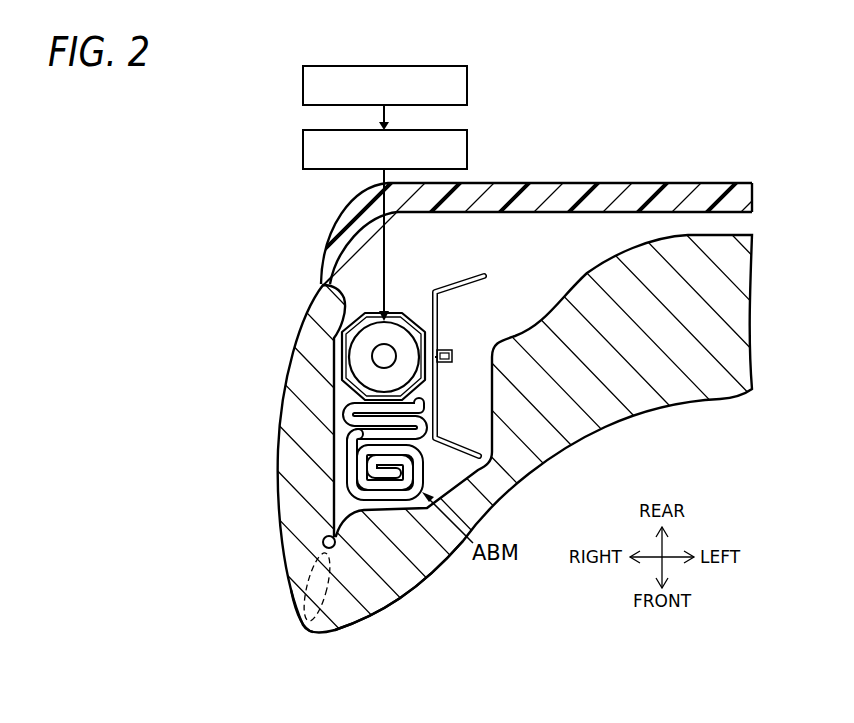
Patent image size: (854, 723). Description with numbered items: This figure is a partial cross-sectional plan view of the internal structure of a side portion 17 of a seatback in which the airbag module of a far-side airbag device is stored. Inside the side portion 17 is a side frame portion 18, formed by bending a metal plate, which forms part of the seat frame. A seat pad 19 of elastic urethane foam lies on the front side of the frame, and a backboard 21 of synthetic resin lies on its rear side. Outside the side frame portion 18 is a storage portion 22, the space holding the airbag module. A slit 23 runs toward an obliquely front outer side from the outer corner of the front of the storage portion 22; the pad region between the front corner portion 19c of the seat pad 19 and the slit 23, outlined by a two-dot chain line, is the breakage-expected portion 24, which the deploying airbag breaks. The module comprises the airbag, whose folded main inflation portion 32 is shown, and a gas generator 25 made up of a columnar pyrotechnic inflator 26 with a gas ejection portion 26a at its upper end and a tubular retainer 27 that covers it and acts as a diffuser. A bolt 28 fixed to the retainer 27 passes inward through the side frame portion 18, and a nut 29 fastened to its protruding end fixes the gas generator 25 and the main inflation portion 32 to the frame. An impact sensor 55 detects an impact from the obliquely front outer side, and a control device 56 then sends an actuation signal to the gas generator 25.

The side portion 17 is at (410, 582).
The side frame portion 18 is at (460, 277).
The seat pad 19 is at (553, 450).
The front corner portion 19c is at (308, 632).
The backboard 21 is at (718, 184).
The storage portion 22 is at (340, 408).
The slit 23 is at (323, 546).
The breakage-expected portion 24 is at (292, 597).
The gas generator 25 is at (321, 336).
The inflator 26 is at (342, 350).
The gas ejection portion 26a is at (386, 355).
The retainer 27 is at (362, 350).
The bolt 28 is at (453, 350).
The nut 29 is at (440, 366).
The main inflation portion 32 is at (347, 468).
The impact sensor 55 is at (469, 86).
The control device 56 is at (469, 150).